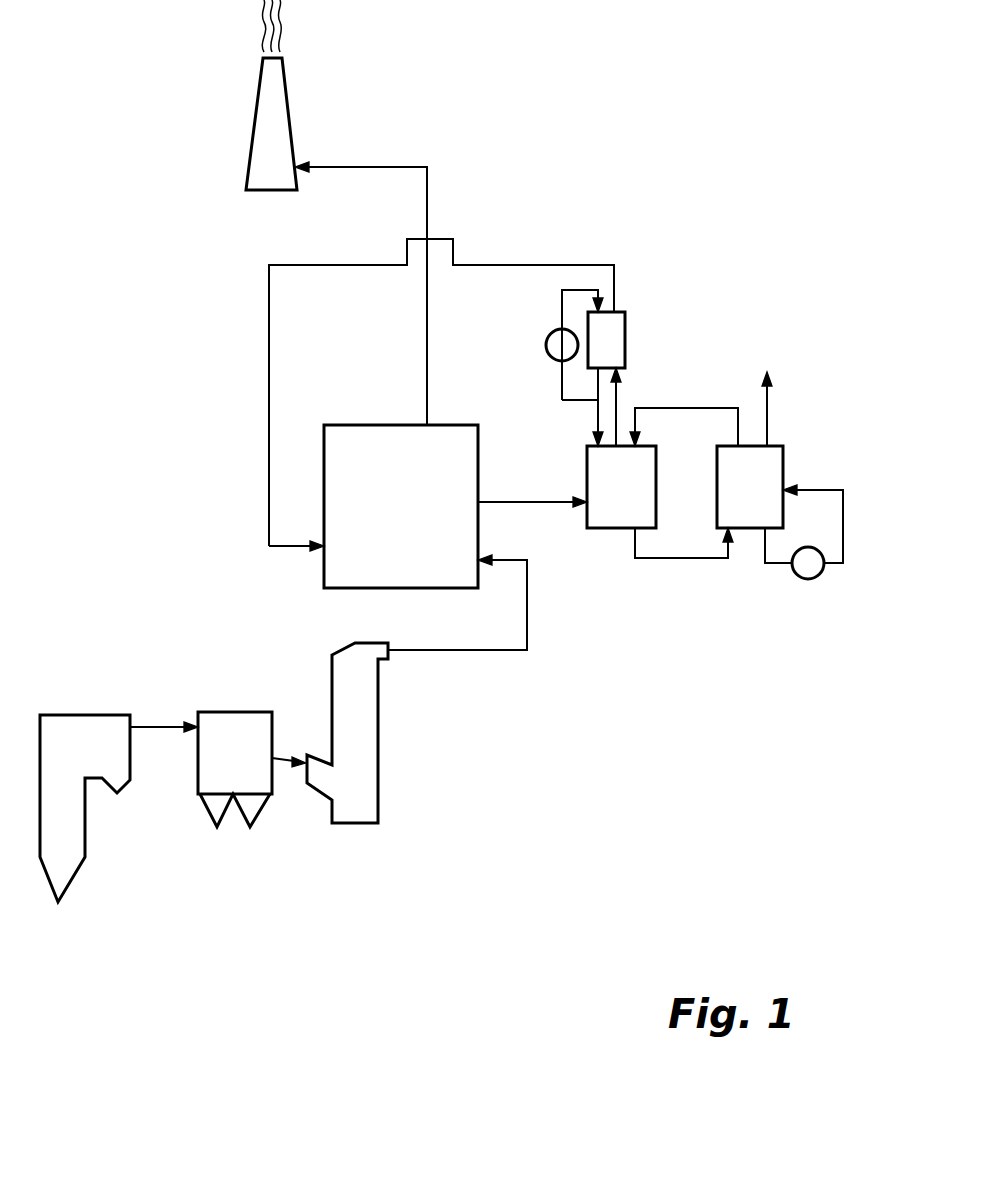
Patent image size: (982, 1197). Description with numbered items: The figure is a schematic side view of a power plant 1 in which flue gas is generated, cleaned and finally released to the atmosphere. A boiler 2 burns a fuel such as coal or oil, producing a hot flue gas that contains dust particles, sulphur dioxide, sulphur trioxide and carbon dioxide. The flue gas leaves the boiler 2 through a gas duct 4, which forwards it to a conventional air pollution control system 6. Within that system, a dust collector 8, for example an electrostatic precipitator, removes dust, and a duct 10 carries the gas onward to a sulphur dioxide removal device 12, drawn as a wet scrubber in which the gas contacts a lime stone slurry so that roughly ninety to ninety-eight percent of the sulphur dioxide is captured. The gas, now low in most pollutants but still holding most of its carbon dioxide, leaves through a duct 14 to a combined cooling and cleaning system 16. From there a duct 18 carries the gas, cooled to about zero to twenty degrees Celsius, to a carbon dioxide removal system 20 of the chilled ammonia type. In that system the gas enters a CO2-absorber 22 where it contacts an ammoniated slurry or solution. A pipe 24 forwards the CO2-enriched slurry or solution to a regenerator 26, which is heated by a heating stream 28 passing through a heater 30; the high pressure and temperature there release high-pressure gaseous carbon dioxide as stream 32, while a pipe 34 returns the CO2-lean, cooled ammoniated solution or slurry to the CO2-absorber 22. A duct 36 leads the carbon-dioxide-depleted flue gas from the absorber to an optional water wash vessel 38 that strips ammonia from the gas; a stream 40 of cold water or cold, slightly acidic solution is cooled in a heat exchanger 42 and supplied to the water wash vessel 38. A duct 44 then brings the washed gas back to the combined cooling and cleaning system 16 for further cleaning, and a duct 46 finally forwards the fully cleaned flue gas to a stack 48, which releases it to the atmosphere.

The power plant 1 is at (128, 168).
The boiler 2 is at (82, 728).
The gas duct 4 is at (157, 731).
The conventional air pollution control system 6 is at (233, 660).
The dust collector 8 is at (195, 777).
The duct 10 is at (283, 763).
The sulphur dioxide removal device 12 is at (378, 707).
The duct 14 is at (526, 628).
The combined cooling and cleaning system 16 is at (356, 411).
The duct 18 is at (527, 502).
The carbon dioxide removal system 20 is at (765, 310).
The CO2-absorber 22 is at (603, 530).
The pipe 24 is at (668, 558).
The regenerator 26 is at (785, 467).
The heating stream 28 is at (773, 565).
The heater 30 is at (808, 580).
The stream 32 is at (768, 399).
The pipe 34 is at (713, 407).
The duct 36 is at (617, 407).
The water wash vessel 38 is at (626, 338).
The stream 40 is at (561, 313).
The heat exchanger 42 is at (548, 352).
The duct 44 is at (512, 263).
The duct 46 is at (427, 340).
The stack 48 is at (251, 125).